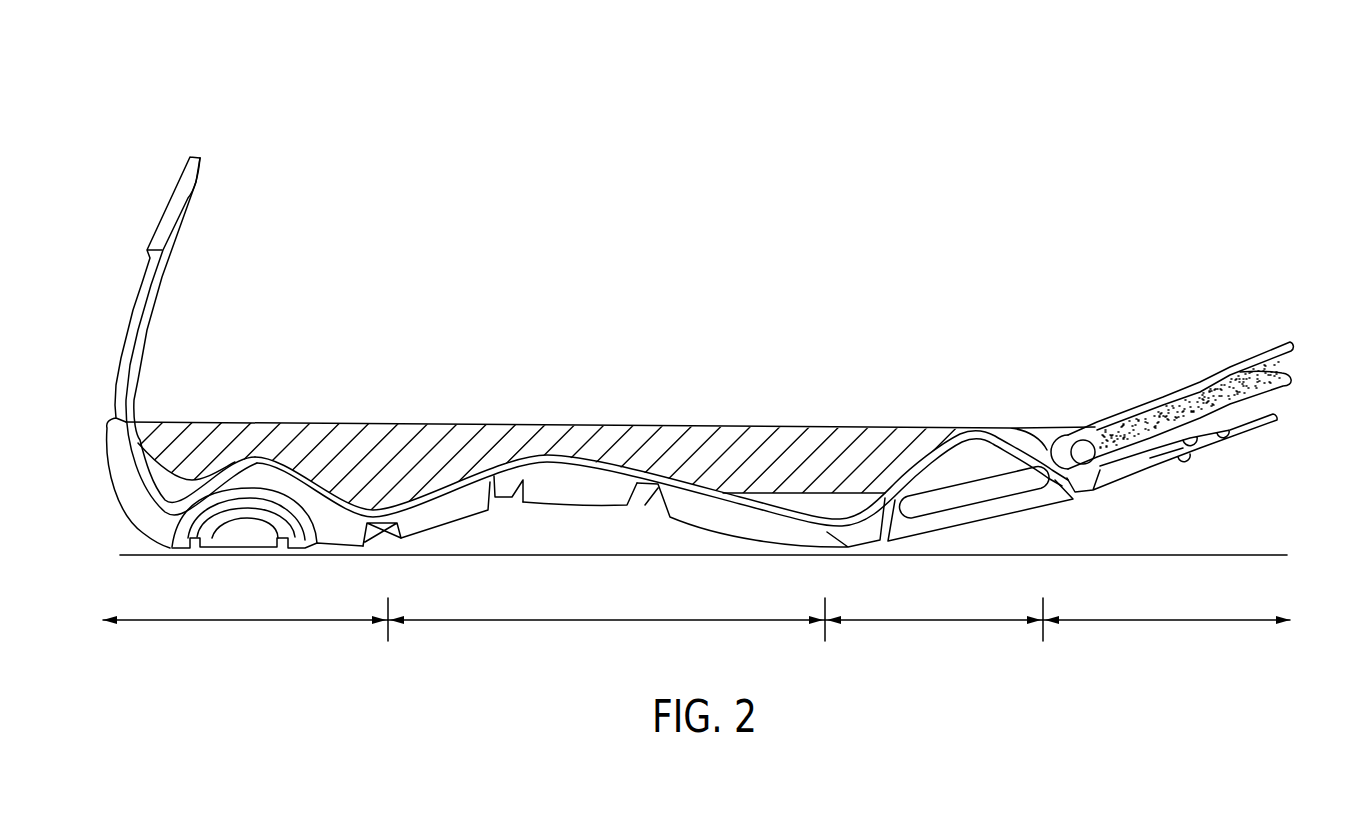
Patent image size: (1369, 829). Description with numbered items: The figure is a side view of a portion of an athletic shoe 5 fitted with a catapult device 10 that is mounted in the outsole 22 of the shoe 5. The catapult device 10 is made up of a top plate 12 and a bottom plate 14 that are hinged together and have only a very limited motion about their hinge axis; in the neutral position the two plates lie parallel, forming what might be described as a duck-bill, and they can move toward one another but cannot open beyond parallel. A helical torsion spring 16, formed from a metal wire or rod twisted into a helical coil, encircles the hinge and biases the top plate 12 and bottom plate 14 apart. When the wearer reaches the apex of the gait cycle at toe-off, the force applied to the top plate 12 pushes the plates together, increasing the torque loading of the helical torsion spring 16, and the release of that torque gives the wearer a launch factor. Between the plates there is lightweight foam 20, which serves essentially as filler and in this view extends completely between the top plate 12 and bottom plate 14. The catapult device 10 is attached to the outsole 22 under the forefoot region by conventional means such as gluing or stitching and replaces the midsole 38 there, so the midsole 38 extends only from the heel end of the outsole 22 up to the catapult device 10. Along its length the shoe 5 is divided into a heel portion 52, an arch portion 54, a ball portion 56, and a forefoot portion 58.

The athletic shoe 5 is at (420, 179).
The catapult device 10 is at (1158, 376).
The top plate 12 is at (1262, 380).
The bottom plate 14 is at (1190, 447).
The helical torsion spring 16 is at (1087, 447).
The lightweight foam 20 is at (1291, 387).
The outsole 22 is at (601, 488).
The midsole 38 is at (850, 440).
The heel portion 52 is at (268, 622).
The arch portion 54 is at (604, 622).
The ball portion 56 is at (962, 622).
The forefoot portion 58 is at (1187, 622).